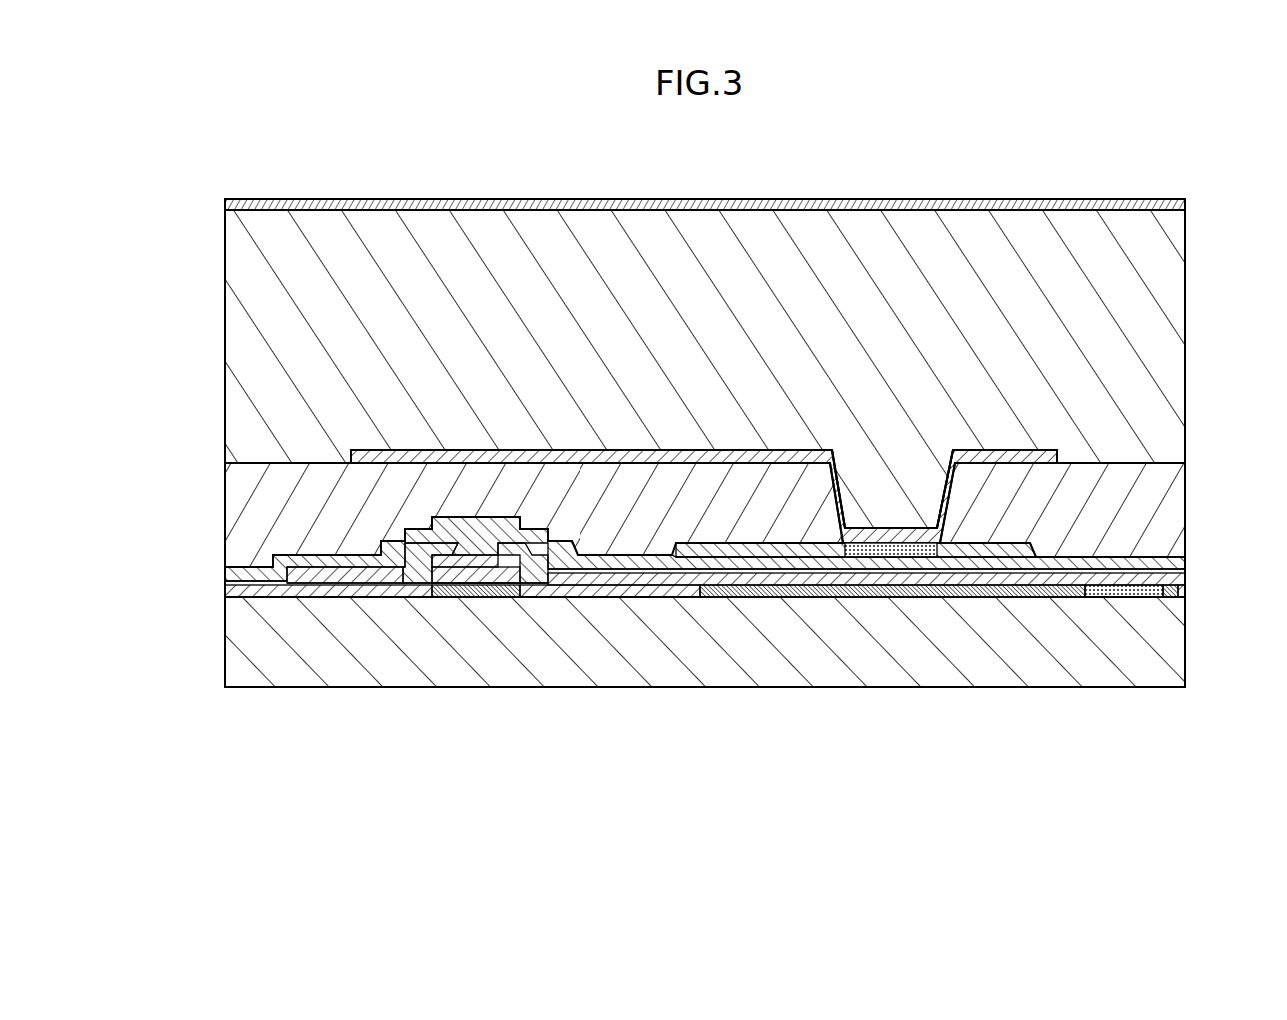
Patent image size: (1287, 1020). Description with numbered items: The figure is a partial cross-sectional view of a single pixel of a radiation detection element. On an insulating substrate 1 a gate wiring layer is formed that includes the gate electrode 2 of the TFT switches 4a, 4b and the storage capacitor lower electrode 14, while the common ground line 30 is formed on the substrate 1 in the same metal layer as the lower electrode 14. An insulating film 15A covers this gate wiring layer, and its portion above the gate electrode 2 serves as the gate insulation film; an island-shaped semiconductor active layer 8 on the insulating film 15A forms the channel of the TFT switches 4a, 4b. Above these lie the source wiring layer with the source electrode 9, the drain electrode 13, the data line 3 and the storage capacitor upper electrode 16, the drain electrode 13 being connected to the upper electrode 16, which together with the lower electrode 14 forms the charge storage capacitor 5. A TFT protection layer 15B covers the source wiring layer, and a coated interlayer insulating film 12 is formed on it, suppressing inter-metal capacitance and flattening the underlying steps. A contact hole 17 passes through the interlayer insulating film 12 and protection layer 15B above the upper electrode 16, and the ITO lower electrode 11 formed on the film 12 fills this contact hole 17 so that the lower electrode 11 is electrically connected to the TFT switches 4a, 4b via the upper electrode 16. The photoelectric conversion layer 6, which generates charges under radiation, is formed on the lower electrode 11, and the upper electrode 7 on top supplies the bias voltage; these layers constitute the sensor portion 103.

The insulating substrate 1 is at (1172, 662).
The gate electrode 2 is at (471, 599).
The data line 3 is at (310, 578).
The TFT switch 4a is at (623, 740).
The TFT switch 4b is at (490, 750).
The charge storage capacitor 5 is at (870, 740).
The photoelectric conversion layer 6 is at (1165, 316).
The upper electrode 7 is at (1025, 199).
The semiconductor active layer 8 is at (507, 568).
The source electrode 9 is at (400, 584).
The lower electrode 11 is at (733, 449).
The interlayer insulating film 12 is at (1168, 503).
The drain electrode 13 is at (586, 584).
The storage capacitor lower electrode 14 is at (838, 599).
The insulating film 15A is at (1185, 581).
The TFT protection layer 15B is at (1185, 562).
The storage capacitor upper electrode 16 is at (752, 599).
The contact hole 17 is at (893, 455).
The common ground line 30 is at (1145, 599).
The sensor portion 103 is at (198, 201).